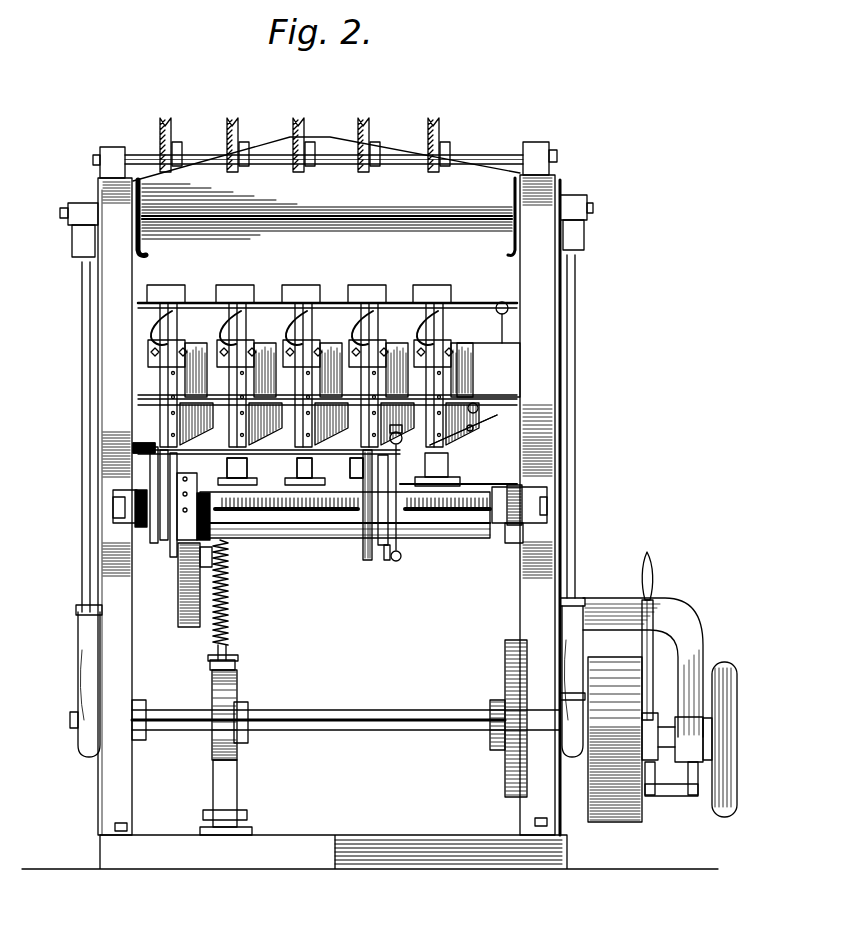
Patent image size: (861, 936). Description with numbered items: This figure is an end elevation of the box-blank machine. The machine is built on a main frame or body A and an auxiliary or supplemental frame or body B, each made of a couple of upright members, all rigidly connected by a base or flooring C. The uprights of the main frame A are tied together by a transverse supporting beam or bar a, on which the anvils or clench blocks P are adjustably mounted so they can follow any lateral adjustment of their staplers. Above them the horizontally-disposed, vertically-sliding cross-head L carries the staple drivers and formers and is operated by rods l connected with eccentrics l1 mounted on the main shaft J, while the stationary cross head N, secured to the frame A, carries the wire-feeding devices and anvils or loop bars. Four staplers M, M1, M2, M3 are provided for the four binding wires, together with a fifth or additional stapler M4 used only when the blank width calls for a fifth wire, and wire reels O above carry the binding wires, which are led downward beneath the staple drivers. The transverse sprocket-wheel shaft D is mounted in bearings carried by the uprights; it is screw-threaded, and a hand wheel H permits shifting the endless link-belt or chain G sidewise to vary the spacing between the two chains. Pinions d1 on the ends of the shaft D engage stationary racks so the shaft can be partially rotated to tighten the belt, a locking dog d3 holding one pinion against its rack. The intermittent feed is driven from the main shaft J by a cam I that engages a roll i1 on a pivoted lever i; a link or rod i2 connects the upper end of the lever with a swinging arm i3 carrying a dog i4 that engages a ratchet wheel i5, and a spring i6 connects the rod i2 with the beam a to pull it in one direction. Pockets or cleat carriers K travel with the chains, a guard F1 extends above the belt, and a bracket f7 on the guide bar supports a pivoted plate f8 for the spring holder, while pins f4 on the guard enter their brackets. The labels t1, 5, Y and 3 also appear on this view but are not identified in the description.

The wire reel O is at (232, 120).
The stapler M is at (162, 372).
The stapler M1 is at (213, 300).
The stapler M2 is at (292, 300).
The stapler M3 is at (358, 300).
The fifth or additional stapler M4 is at (436, 300).
The cross-head L is at (497, 272).
The main frame or body A is at (545, 315).
The stationary cross head N is at (507, 360).
The rod l is at (572, 458).
The eccentric l1 is at (578, 647).
The cylinder t1 is at (90, 680).
The bracket f7 is at (455, 452).
The pivoted plate f8 is at (448, 466).
The pin f4 is at (152, 455).
The pocket or cleat carrier K is at (150, 490).
The guard F1 is at (178, 560).
The pinion d1 is at (135, 515).
The locking dog d3 is at (148, 540).
The anvil or clench block P is at (300, 470).
The stand 5 is at (222, 470).
The stand Y is at (315, 470).
The stand 3 is at (358, 484).
The dog i4 is at (200, 565).
The swinging arm i3 is at (198, 605).
The ratchet wheel i5 is at (232, 556).
The spring i6 is at (230, 640).
The link or rod i2 is at (232, 656).
The cam I is at (228, 697).
The roll i1 is at (222, 692).
The pivoted lever i is at (238, 794).
The main shaft J is at (362, 710).
The sprocket-wheel shaft D is at (365, 525).
The endless link-belt or chain G is at (390, 565).
The hand wheel H is at (402, 560).
The transverse supporting beam or bar a is at (483, 530).
The auxiliary or supplemental frame or body B is at (98, 797).
The base or flooring C is at (366, 840).